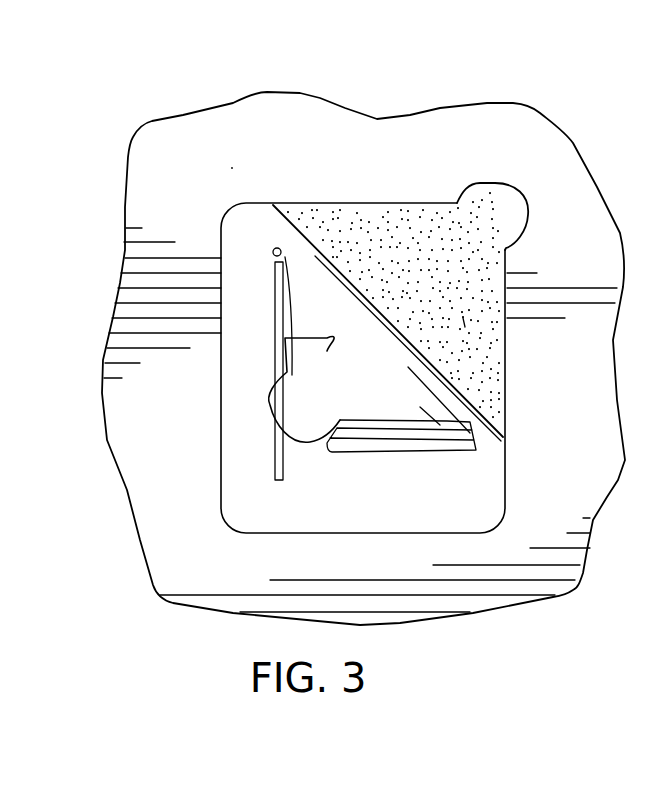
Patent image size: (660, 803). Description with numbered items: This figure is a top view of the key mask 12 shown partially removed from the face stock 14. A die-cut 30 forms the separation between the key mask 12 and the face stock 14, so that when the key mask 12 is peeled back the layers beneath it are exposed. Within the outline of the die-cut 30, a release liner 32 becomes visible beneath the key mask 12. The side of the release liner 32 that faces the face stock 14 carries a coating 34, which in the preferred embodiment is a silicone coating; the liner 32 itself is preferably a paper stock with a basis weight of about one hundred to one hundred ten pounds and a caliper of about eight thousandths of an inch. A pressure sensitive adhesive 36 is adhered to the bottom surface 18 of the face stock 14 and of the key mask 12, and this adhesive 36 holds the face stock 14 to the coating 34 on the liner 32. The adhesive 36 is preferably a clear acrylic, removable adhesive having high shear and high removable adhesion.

The key mask 12 is at (326, 178).
The face stock 14 is at (220, 147).
The bottom surface 18 is at (330, 337).
The die-cut 30 is at (400, 203).
The release liner 32 is at (465, 327).
The coating 34 is at (467, 233).
The pressure sensitive adhesive 36 is at (363, 395).